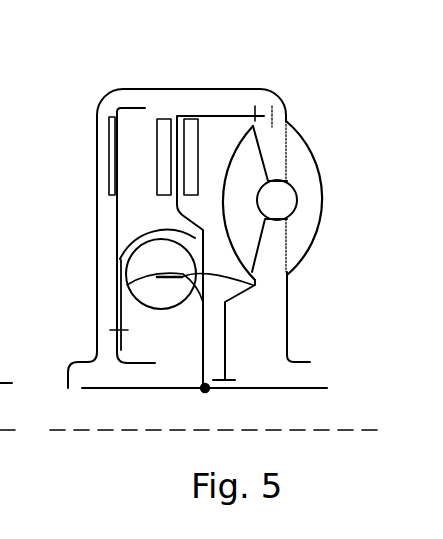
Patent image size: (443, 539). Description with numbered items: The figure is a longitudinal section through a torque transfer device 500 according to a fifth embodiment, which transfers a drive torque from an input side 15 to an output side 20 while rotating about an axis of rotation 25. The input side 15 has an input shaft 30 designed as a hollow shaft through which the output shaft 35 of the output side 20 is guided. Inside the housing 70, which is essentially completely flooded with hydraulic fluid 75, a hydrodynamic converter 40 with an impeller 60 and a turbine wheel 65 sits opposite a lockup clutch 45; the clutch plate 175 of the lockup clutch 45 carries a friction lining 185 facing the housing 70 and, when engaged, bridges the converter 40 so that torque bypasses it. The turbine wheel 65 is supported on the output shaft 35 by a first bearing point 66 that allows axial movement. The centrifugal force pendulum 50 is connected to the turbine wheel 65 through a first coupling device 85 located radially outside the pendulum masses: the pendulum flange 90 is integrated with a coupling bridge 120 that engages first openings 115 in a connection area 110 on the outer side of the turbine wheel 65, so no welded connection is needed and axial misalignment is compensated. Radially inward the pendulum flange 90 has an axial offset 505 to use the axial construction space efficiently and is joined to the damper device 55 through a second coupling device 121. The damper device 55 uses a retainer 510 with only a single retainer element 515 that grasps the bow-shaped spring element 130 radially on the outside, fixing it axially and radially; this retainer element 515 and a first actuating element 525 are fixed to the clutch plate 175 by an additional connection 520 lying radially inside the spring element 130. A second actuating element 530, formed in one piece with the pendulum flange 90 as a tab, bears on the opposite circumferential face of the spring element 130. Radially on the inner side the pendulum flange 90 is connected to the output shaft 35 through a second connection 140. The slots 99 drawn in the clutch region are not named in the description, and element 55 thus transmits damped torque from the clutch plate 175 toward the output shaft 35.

The input side 15 is at (340, 303).
The output side 20 is at (318, 377).
The axis of rotation 25 is at (80, 433).
The input shaft 30 is at (290, 356).
The output shaft 35 is at (282, 389).
The hydrodynamic converter 40 is at (315, 134).
The lockup clutch 45 is at (97, 90).
The centrifugal force pendulum 50 is at (166, 98).
The damper device 55 is at (147, 328).
The impeller 60 is at (307, 193).
The turbine wheel 65 is at (247, 177).
The first bearing point 66 is at (232, 381).
The housing 70 is at (237, 100).
The hydraulic fluid 75 is at (277, 240).
The first coupling device 85 is at (255, 105).
The pendulum flange 90 is at (200, 212).
The light source 99 is at (161, 121).
The connection area 110 is at (286, 116).
The first opening 115 is at (273, 105).
The coupling bridge 120 is at (214, 114).
The second coupling device 121 is at (146, 231).
The spring element 130 is at (175, 310).
The second connection 140 is at (207, 390).
The clutch plate 175 is at (115, 194).
The friction lining 185 is at (112, 150).
The torque transfer device 500 is at (343, 94).
The axial offset 505 is at (177, 235).
The retainer 510 is at (117, 258).
The retainer element 515 is at (119, 240).
The additional connection 520 is at (118, 330).
The first actuating element 525 is at (150, 281).
The second actuating element 530 is at (285, 297).